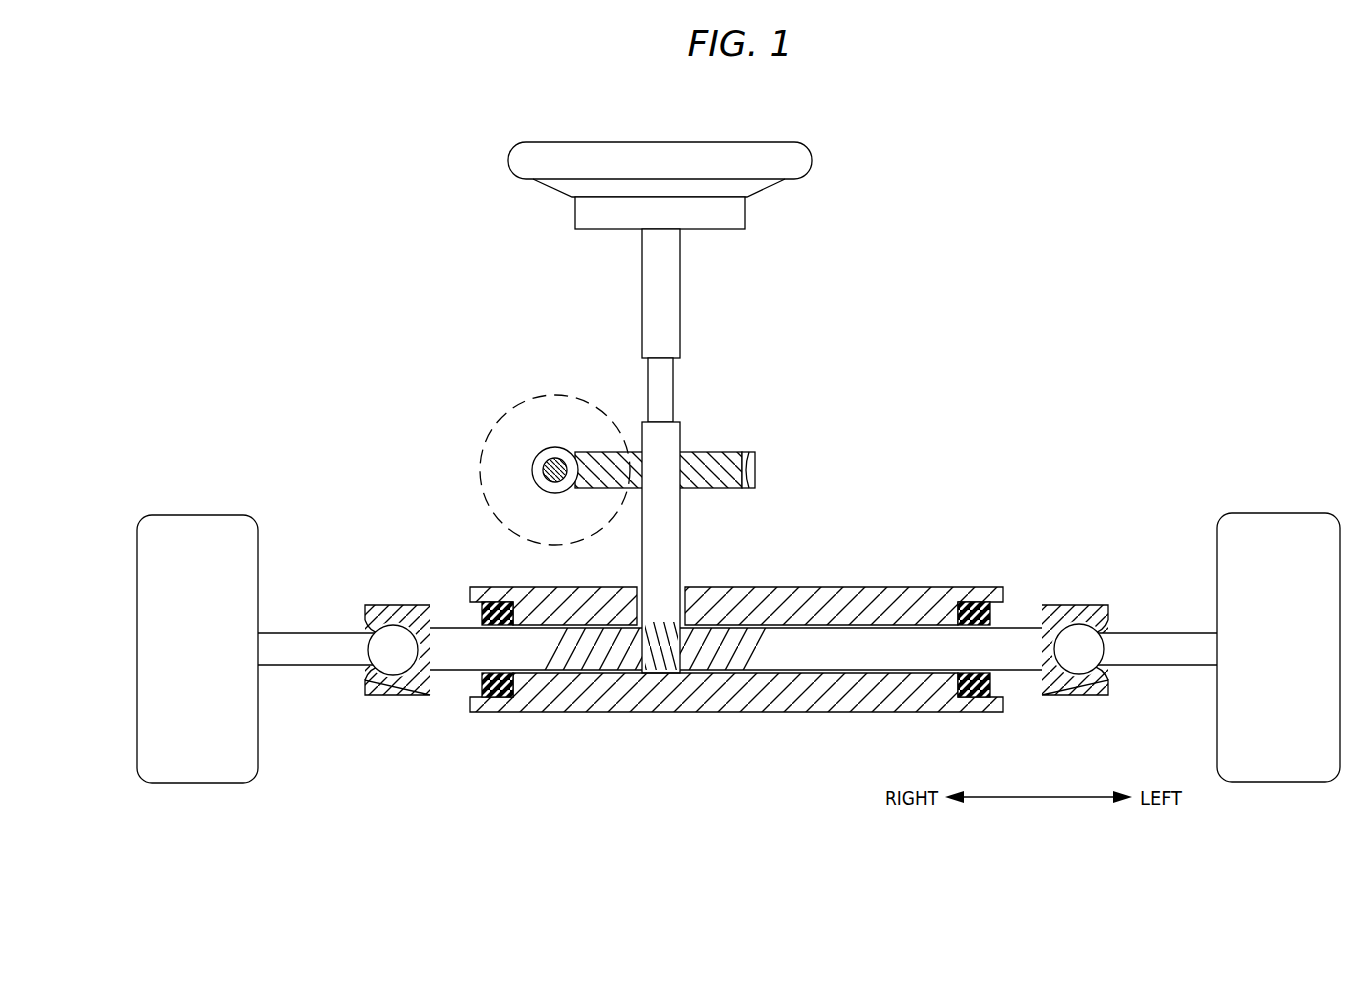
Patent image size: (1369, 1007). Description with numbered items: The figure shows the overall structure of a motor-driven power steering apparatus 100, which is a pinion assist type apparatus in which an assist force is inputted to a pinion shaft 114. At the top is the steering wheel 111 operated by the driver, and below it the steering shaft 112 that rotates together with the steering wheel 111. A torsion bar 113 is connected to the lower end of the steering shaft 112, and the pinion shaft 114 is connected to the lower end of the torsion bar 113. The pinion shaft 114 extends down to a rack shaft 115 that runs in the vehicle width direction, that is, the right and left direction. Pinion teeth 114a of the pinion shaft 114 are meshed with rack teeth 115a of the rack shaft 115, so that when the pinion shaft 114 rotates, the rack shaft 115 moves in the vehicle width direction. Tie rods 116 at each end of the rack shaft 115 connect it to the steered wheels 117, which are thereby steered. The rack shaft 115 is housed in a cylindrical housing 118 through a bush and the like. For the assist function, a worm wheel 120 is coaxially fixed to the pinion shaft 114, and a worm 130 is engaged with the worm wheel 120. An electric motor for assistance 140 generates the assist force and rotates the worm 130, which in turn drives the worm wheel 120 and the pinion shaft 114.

The motor-driven power steering apparatus 100 is at (430, 231).
The steering wheel 111 is at (813, 160).
The steering shaft 112 is at (681, 292).
The torsion bar 113 is at (674, 390).
The pinion shaft 114 is at (697, 593).
The pinion teeth 114a is at (653, 672).
The rack shaft 115 is at (736, 699).
The rack teeth 115a is at (610, 660).
The tie rods 116 is at (305, 631).
The steered wheels 117 is at (194, 514).
The cylindrical housing 118 is at (857, 584).
The worm wheel 120 is at (757, 470).
The worm 130 is at (533, 463).
The electric motor for assistance 140 is at (479, 486).